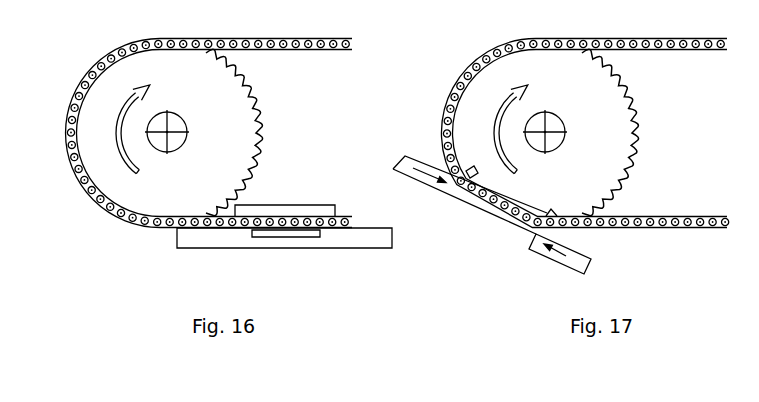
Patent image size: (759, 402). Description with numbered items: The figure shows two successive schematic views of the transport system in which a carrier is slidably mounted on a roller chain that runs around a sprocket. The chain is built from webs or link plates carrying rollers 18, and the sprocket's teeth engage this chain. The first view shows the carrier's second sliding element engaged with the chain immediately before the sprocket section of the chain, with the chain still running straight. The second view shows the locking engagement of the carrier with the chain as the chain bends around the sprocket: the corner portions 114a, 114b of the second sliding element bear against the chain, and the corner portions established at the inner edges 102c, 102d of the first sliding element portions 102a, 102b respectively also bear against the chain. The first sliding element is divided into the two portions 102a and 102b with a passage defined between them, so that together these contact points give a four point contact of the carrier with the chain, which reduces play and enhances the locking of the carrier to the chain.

The rollers 18 is at (669, 214).
The first sliding element portion 102a is at (591, 259).
The first sliding element portion 102b is at (399, 166).
The inner edge of first sliding element portion 102c is at (531, 229).
The inner edge of first sliding element portion 102d is at (463, 197).
The corner portion of second sliding element 114a is at (469, 172).
The corner portion of second sliding element 114b is at (540, 211).